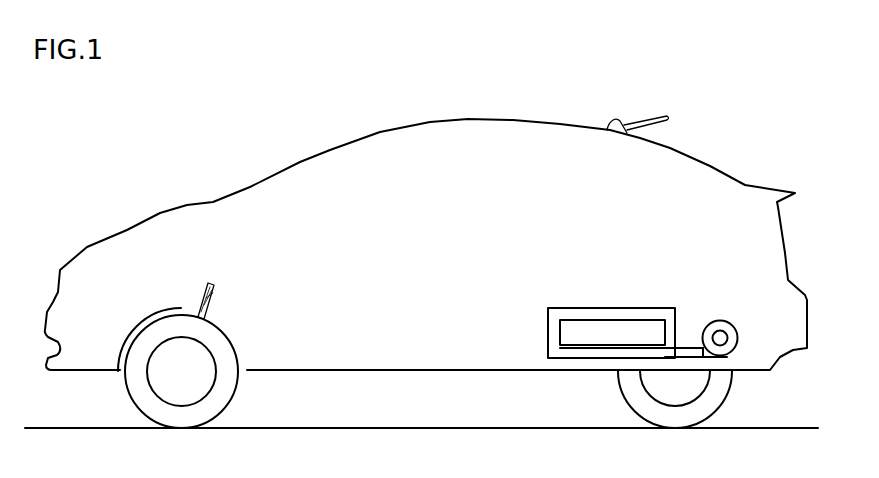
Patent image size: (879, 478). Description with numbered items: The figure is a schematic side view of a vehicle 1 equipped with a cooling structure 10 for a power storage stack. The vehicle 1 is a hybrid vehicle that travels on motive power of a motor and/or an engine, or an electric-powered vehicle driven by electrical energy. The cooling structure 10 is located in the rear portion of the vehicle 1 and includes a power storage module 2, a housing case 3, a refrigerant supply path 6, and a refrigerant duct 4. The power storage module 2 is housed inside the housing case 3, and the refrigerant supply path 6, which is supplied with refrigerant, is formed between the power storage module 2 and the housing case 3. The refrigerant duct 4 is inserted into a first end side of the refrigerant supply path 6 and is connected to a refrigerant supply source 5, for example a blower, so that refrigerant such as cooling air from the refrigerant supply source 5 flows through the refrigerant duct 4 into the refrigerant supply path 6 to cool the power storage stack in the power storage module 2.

The vehicle 1 is at (469, 119).
The cooling structure 10 is at (652, 272).
The power storage module 2 is at (616, 320).
The housing case 3 is at (590, 307).
The refrigerant duct 4 is at (690, 347).
The refrigerant supply source 5 is at (723, 322).
The refrigerant supply path 6 is at (615, 350).